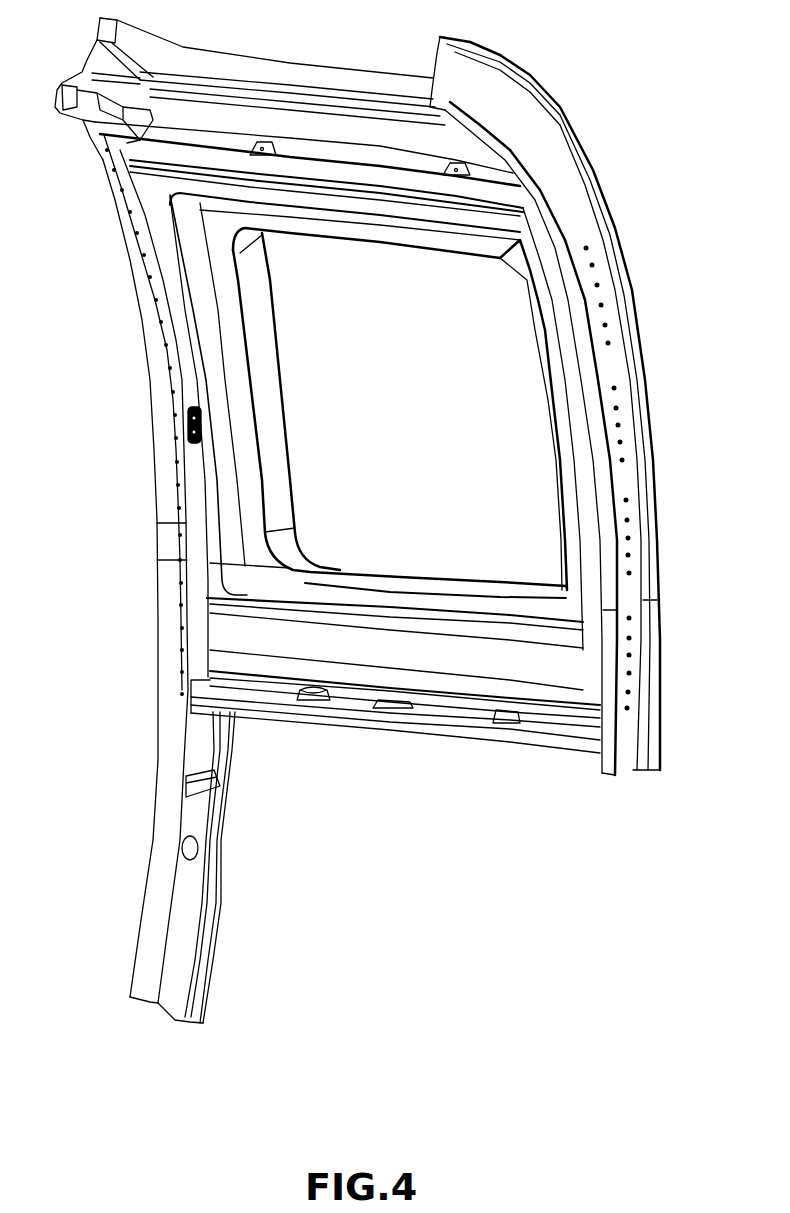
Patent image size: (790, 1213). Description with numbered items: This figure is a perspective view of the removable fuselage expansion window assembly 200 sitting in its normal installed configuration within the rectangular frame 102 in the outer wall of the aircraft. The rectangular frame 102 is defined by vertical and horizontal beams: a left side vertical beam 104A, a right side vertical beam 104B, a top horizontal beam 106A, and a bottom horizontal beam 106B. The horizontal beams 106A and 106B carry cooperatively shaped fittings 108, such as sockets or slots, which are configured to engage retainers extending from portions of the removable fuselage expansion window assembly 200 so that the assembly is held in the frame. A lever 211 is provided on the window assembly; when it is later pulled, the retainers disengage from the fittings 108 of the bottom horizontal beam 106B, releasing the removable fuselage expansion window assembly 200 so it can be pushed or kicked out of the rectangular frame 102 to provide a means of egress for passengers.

The rectangular frame 102 is at (275, 730).
The left side vertical beam 104A is at (168, 642).
The right side vertical beam 104B is at (580, 198).
The top horizontal beam 106A is at (190, 133).
The bottom horizontal beam 106B is at (382, 720).
The cooperatively shaped fittings 108 is at (265, 135).
The removable fuselage expansion window assembly 200 is at (263, 638).
The lever 211 is at (190, 420).